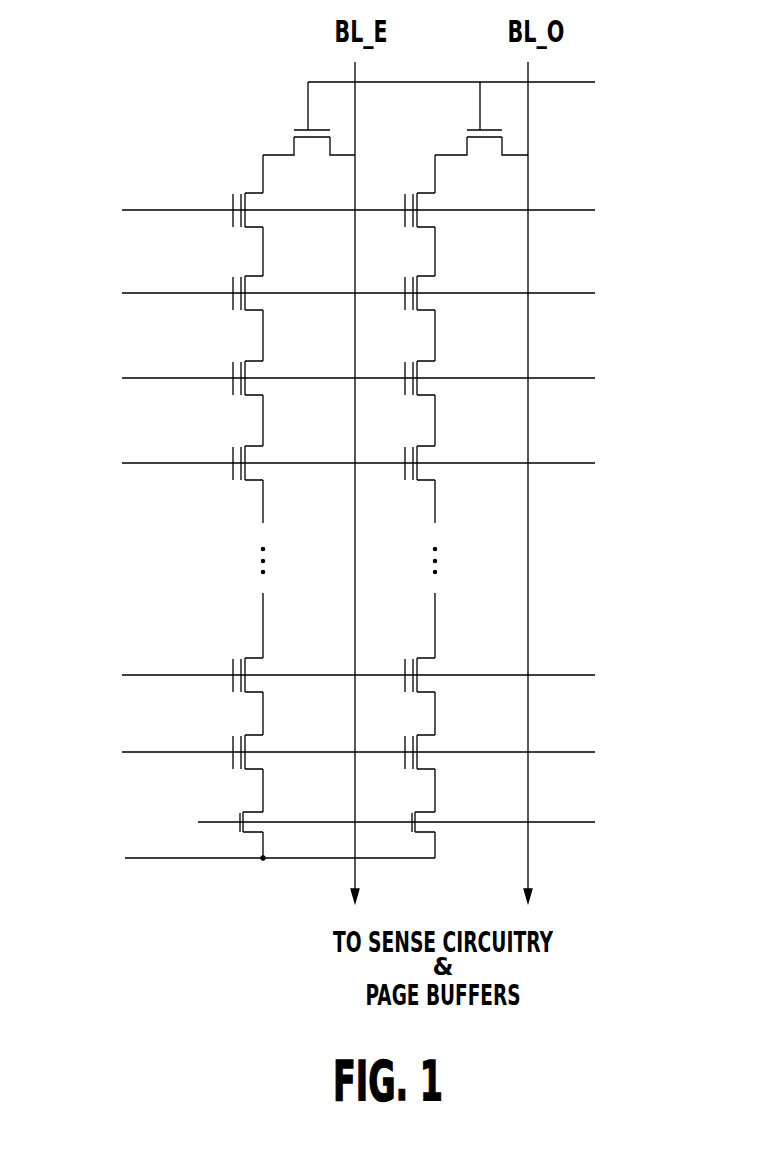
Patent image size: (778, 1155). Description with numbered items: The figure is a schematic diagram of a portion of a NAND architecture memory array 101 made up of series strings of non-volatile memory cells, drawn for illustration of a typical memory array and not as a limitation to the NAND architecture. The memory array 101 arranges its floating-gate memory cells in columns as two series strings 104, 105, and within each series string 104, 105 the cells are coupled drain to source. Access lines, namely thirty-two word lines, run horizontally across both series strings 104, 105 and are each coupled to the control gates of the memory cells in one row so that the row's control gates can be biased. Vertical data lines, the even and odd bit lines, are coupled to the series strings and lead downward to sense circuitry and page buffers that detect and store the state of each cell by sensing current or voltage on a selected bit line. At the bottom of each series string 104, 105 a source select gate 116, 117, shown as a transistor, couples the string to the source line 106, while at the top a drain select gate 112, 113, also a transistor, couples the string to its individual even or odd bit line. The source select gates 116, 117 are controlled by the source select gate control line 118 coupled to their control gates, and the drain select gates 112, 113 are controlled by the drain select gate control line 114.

The NAND architecture memory array 101 is at (204, 128).
The series string 104 is at (258, 496).
The series string 105 is at (445, 493).
The source line 106 is at (128, 872).
The drain select gate 112 is at (292, 129).
The drain select gate 113 is at (466, 129).
The drain select gate control line SG(D) 114 is at (578, 81).
The source select gate 116 is at (246, 840).
The source select gate 117 is at (418, 838).
The source select gate control line SG(S) 118 is at (577, 821).